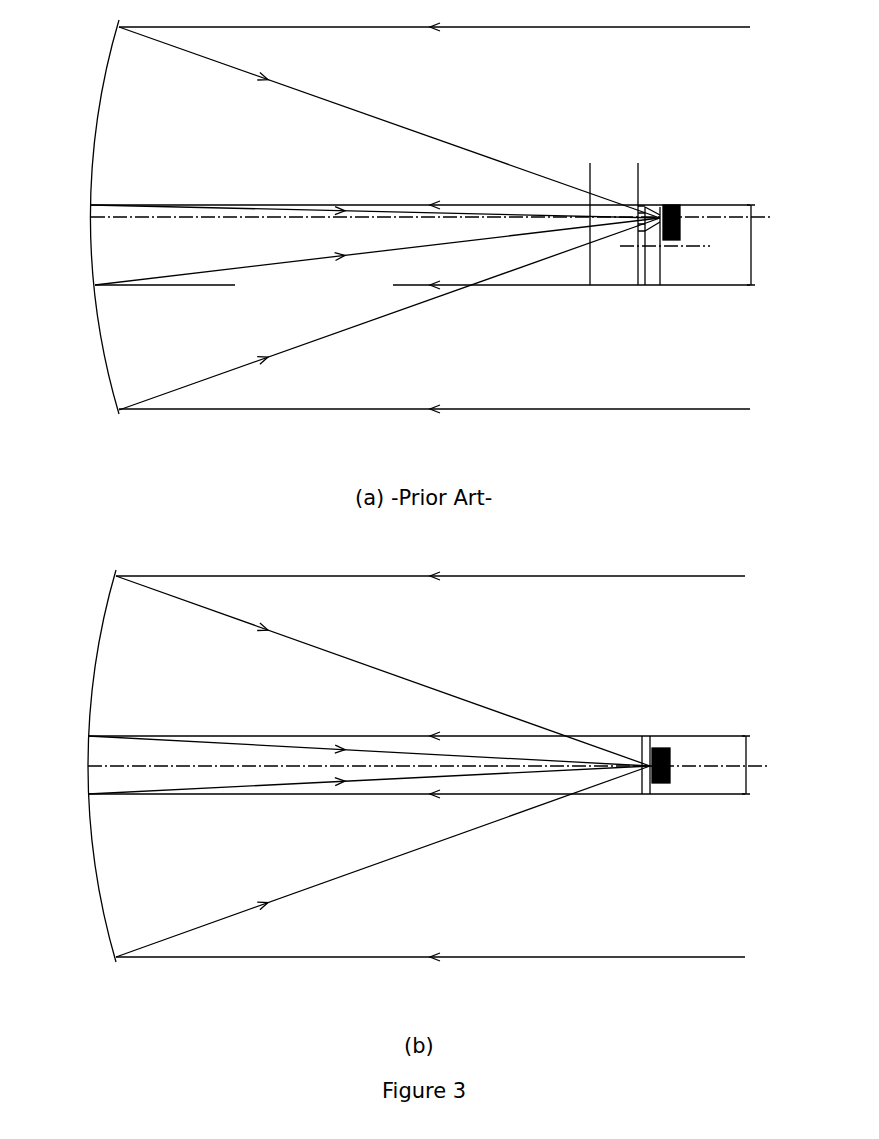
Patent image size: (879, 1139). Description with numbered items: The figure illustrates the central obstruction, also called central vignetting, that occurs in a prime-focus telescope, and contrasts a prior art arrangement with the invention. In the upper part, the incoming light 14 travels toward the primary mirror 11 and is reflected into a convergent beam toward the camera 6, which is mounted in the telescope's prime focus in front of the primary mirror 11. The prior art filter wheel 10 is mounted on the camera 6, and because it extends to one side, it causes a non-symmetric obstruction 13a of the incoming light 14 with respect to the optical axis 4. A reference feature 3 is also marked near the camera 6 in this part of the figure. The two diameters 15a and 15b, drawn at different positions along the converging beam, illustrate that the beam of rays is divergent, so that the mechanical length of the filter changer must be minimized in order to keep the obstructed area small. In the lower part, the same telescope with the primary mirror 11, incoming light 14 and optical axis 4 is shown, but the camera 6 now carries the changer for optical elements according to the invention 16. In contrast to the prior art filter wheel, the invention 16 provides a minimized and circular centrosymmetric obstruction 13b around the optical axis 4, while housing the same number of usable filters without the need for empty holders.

The incoming light 14 is at (318, 28).
The primary mirror 11 is at (94, 147).
The optical axis 4 is at (260, 218).
The diameter 15a is at (578, 224).
The diameter 15b is at (625, 224).
The prior art filter wheel 10 is at (653, 207).
The camera 6 is at (677, 210).
The detector axis 3 is at (667, 247).
The non-symmetric obstruction 13a is at (762, 245).
The changer for optical elements 16 is at (645, 742).
The circular centrosymmetric obstruction 13b is at (758, 765).